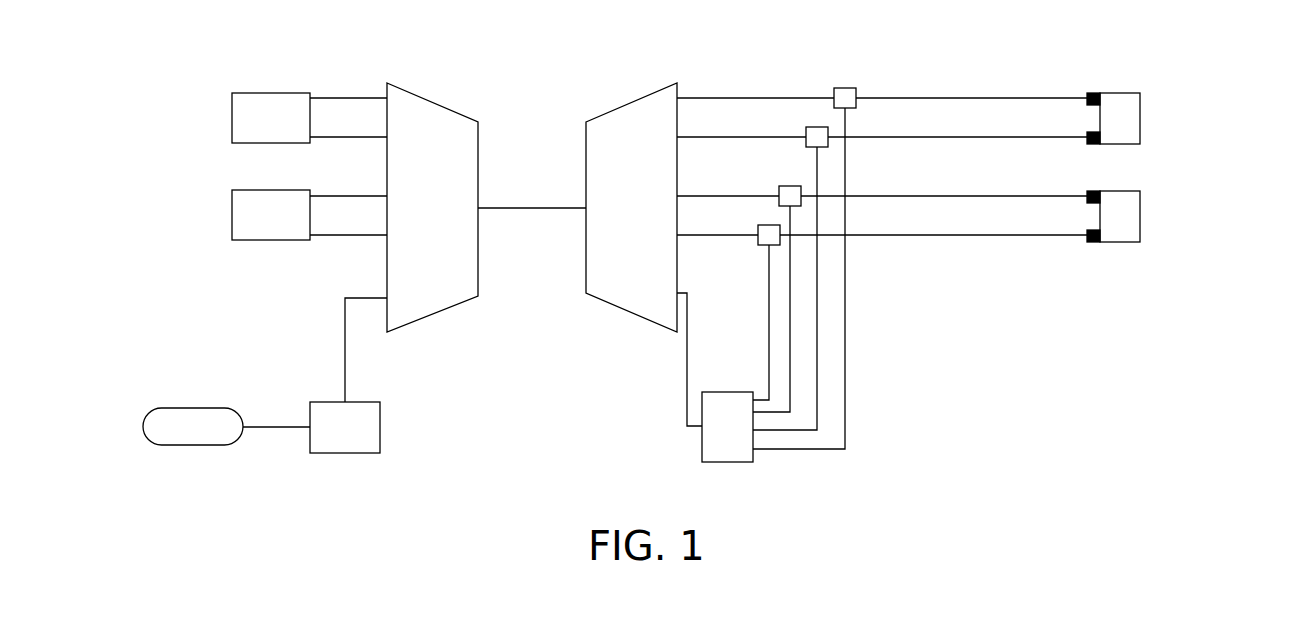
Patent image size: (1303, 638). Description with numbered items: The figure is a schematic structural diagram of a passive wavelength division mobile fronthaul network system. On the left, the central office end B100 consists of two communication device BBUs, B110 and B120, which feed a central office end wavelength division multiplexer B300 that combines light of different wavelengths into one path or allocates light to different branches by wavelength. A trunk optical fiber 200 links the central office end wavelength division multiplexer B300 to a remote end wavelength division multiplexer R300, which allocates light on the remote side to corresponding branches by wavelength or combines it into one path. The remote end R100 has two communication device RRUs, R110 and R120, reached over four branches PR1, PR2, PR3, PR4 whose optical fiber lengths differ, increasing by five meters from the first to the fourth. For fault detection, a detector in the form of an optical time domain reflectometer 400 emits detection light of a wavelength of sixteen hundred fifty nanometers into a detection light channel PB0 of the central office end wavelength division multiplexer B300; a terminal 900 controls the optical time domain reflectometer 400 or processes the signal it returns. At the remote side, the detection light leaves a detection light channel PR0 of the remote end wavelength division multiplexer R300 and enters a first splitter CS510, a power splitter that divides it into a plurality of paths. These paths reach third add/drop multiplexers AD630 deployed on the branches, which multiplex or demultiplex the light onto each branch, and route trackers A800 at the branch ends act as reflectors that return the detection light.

The central office end B100 is at (128, 93).
The communication device BBU B110 is at (232, 114).
The communication device BBU B120 is at (232, 212).
The central office end wavelength division multiplexer B300 is at (433, 103).
The trunk optical fiber 200 is at (522, 207).
The remote end wavelength division multiplexer R300 is at (633, 102).
The detection light channel PB0 is at (387, 292).
The optical time domain reflectometer 400 is at (380, 420).
The terminal 900 is at (193, 408).
The branch of the remote end PR1 is at (961, 97).
The branch of the remote end PR2 is at (968, 136).
The branch of the remote end PR3 is at (972, 195).
The branch of the remote end PR4 is at (972, 234).
The detection light channel PR0 is at (677, 290).
The third add/drop multiplexer AD630 is at (845, 88).
The first splitter CS510 is at (702, 450).
The route tracker A800 is at (1095, 93).
The remote end R100 is at (1215, 97).
The communication device RRU R110 is at (1142, 93).
The communication device RRU R120 is at (1142, 191).